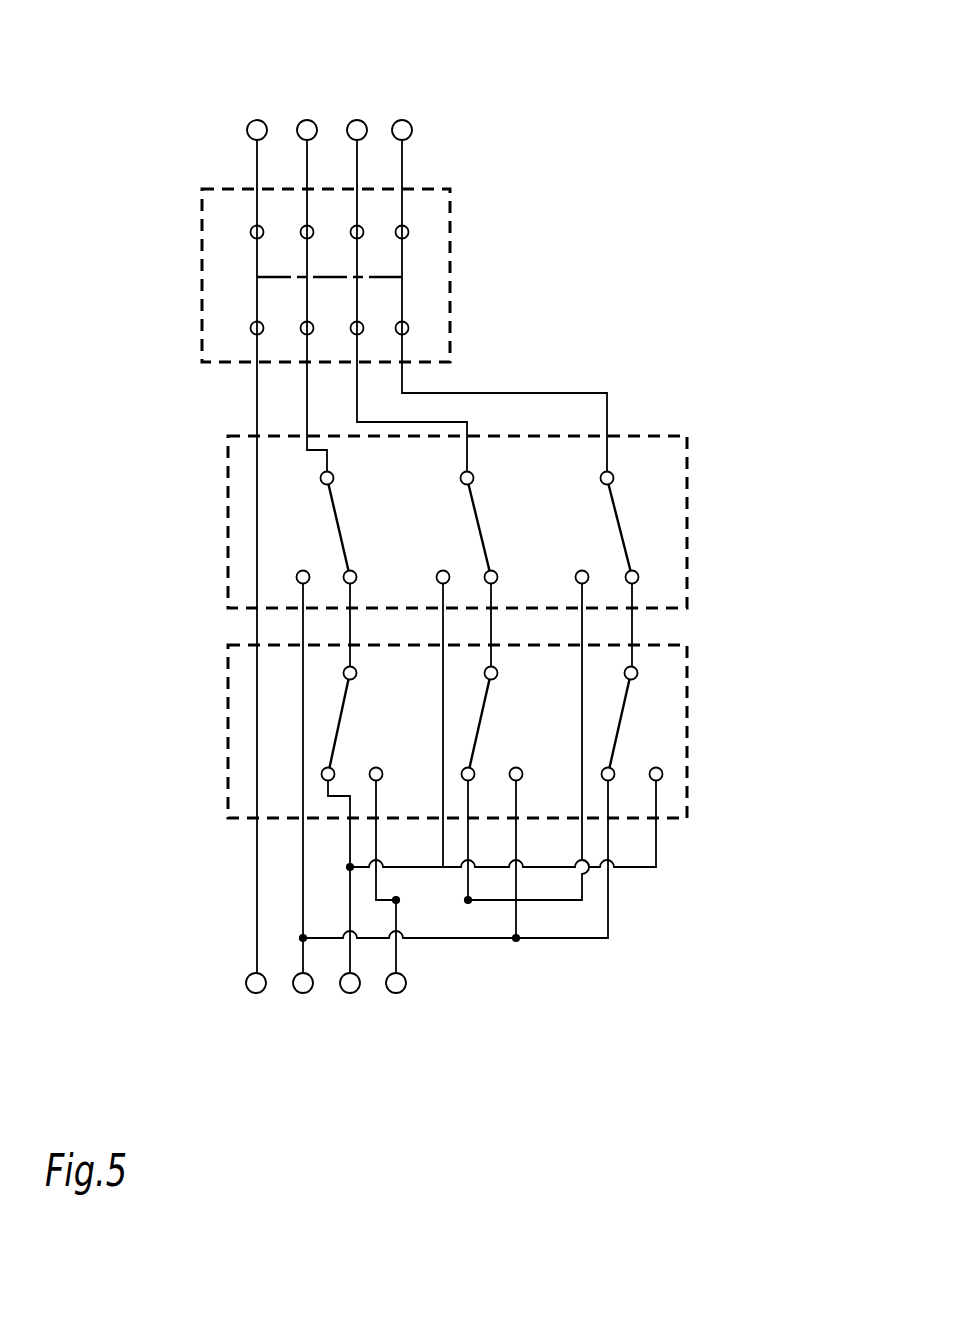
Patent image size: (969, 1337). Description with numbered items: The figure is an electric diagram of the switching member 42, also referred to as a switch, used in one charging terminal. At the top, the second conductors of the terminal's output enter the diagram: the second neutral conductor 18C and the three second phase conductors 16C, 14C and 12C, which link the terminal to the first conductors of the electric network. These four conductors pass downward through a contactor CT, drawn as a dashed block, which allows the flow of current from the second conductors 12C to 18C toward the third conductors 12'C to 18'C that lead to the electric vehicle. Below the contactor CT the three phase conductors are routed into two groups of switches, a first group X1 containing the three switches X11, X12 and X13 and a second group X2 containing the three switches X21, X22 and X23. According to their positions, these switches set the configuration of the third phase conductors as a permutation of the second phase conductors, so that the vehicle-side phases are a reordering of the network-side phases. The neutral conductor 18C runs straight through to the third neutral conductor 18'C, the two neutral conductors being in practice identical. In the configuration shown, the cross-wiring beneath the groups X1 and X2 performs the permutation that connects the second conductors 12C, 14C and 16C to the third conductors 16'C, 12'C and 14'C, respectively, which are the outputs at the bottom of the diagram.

The switching member 42 is at (587, 167).
The contactor CT is at (450, 188).
The second neutral conductor 18C is at (257, 160).
The second phase conductor 16C is at (307, 160).
The second phase conductor 14C is at (357, 160).
The second phase conductor 12C is at (402, 150).
The first group of switches X1 is at (687, 436).
The switch X11 is at (341, 533).
The switch X12 is at (484, 547).
The switch X13 is at (620, 527).
The second group of switches X2 is at (687, 645).
The switch X21 is at (339, 727).
The switch X22 is at (480, 726).
The switch X23 is at (618, 735).
The third neutral conductor 18'C is at (269, 1002).
The third phase conductor 16'C is at (316, 1006).
The third phase conductor 14'C is at (367, 1004).
The third phase conductor 12'C is at (422, 972).